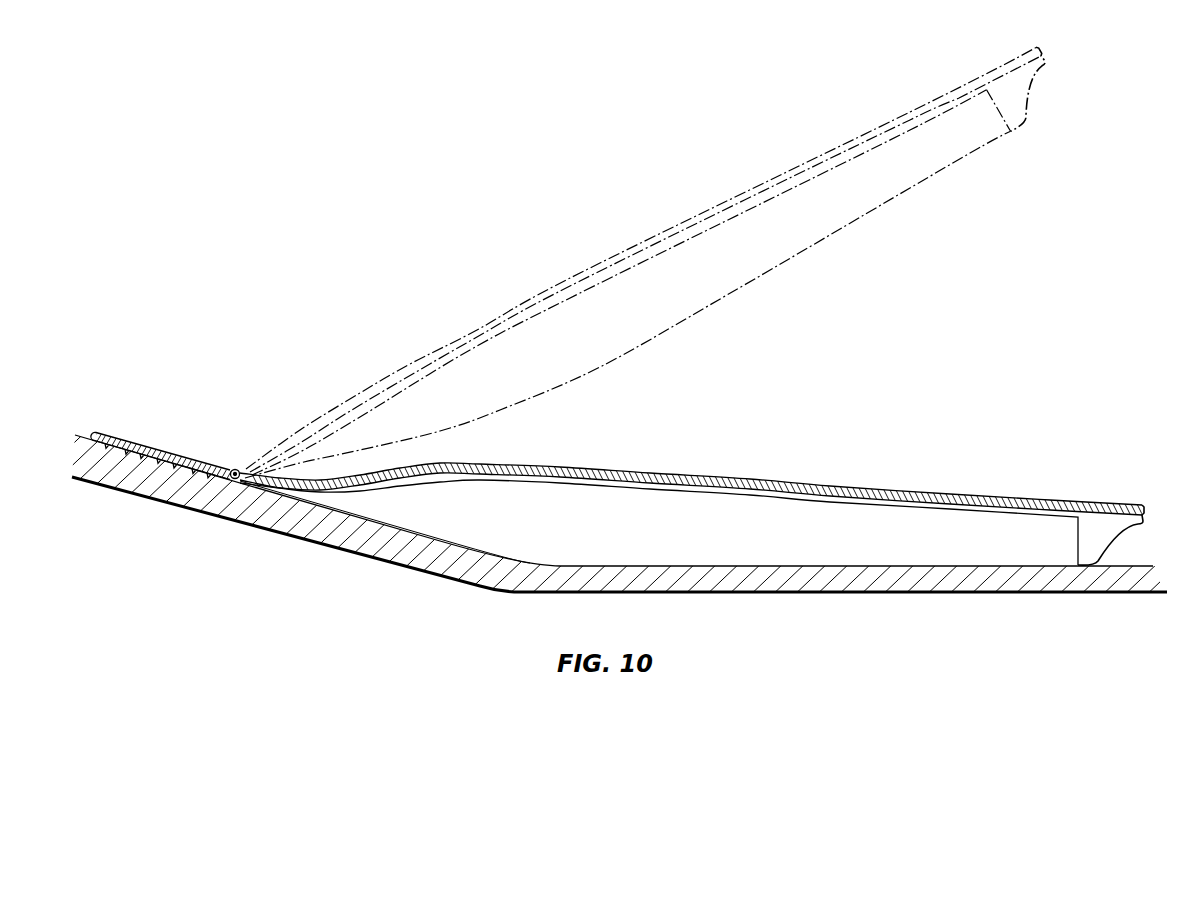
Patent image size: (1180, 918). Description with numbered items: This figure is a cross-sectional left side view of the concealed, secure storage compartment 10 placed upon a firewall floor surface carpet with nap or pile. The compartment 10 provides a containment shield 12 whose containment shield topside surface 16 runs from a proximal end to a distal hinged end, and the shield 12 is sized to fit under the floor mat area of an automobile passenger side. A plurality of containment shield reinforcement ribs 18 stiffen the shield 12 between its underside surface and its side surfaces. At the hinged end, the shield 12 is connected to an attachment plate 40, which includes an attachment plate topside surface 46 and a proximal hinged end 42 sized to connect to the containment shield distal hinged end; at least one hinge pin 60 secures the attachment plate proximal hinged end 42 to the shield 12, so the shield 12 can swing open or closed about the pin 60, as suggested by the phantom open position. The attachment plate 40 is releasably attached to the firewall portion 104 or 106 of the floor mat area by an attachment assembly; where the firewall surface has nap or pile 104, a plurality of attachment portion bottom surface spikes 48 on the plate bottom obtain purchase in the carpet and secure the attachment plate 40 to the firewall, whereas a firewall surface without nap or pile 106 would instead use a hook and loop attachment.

The concealed, secure storage compartment 10 is at (952, 393).
The containment shield 12 is at (380, 465).
The containment shield topside surface 16 is at (437, 468).
The containment shield reinforcement ribs 18 is at (654, 537).
The attachment plate 40 is at (125, 433).
The attachment plate proximal hinged end 42 is at (238, 484).
The attachment plate topside surface 46 is at (192, 476).
The attachment portion bottom surface spikes 48 is at (177, 467).
The hinge pin 60 is at (236, 469).
The firewall surface with nap or pile 104 is at (455, 568).
The firewall surface without nap or pile 106 is at (333, 553).